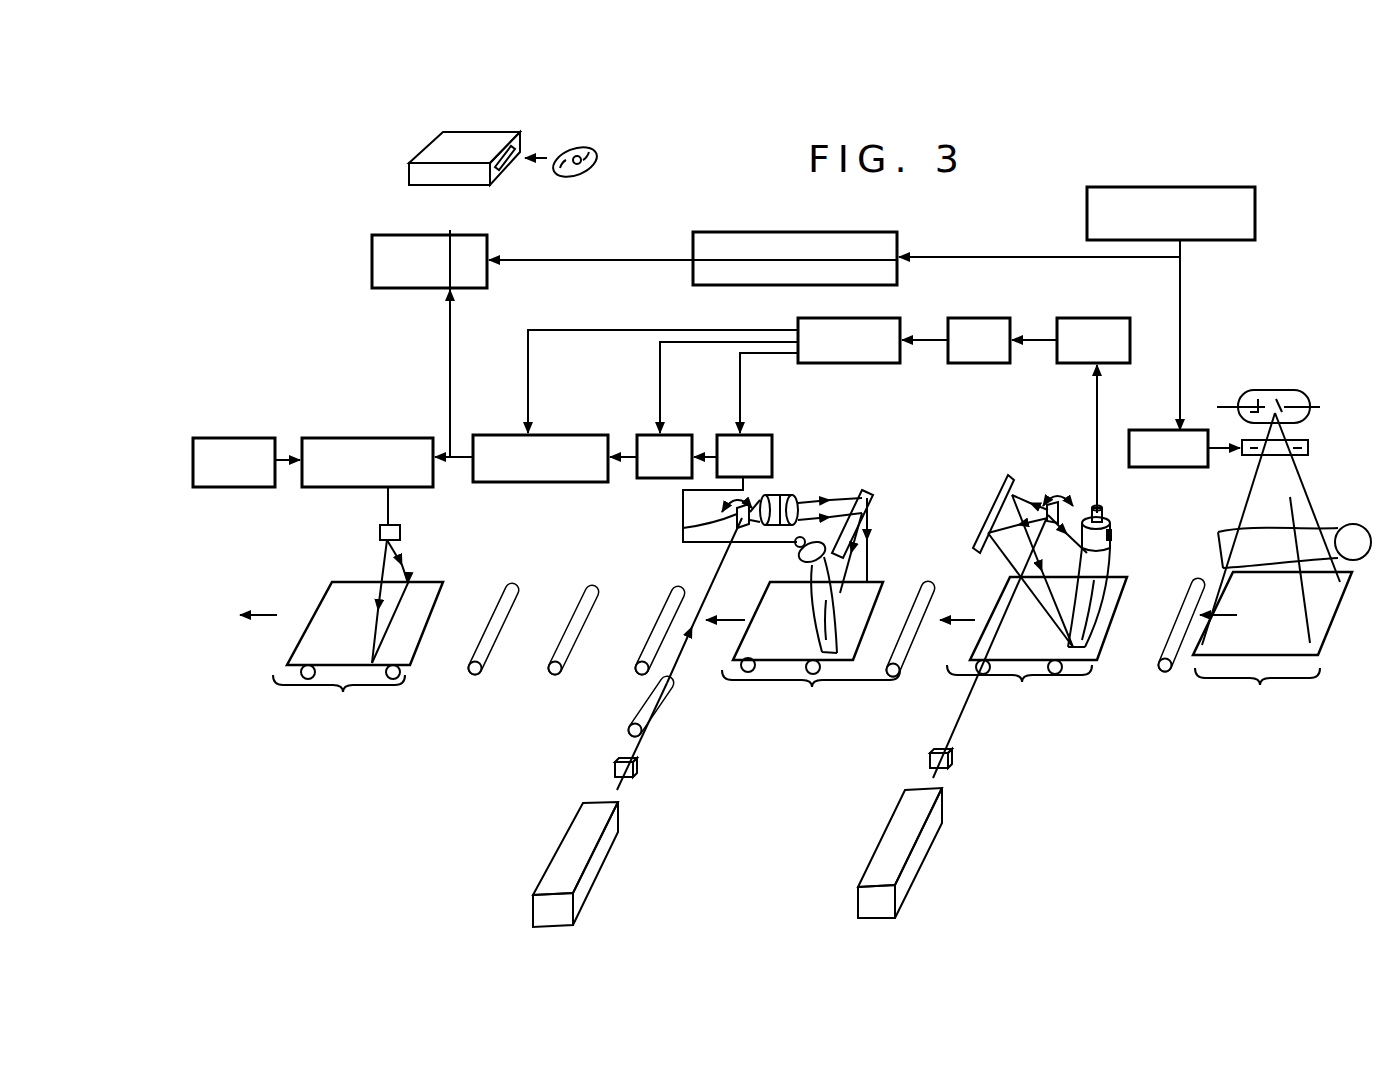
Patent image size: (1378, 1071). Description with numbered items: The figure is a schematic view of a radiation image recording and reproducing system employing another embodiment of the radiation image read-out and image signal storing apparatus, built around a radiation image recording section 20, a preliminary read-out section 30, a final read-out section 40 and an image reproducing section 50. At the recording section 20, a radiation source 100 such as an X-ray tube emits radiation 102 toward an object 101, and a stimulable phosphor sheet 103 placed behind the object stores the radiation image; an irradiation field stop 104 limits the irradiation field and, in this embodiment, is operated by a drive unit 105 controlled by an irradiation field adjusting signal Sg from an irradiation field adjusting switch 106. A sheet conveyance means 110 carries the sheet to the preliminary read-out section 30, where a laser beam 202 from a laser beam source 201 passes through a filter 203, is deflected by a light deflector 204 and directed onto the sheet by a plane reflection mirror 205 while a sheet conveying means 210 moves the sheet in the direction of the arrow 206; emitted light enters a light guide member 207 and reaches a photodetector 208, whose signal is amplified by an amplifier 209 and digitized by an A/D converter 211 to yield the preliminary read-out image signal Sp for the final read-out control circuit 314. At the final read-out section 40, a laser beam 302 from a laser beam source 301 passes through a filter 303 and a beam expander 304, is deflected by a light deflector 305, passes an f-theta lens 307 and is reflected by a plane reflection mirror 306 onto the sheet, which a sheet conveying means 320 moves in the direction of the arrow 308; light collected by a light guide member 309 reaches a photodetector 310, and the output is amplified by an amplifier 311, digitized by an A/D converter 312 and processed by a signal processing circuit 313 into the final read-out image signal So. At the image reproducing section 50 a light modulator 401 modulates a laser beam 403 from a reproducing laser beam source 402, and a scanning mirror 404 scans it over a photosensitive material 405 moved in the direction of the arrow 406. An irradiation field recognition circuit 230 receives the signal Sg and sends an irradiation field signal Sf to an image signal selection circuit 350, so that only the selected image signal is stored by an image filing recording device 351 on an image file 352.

The radiation source 100 is at (1297, 384).
The object 101 is at (1340, 534).
The radiation 102 is at (1252, 486).
The stimulable phosphor sheet 103 is at (1322, 622).
The irradiation field stop 104 is at (1243, 458).
The drive unit 105 is at (1147, 428).
The irradiation field adjusting switch 106 is at (1180, 186).
The sheet conveyance means 110 is at (1163, 672).
The radiation image recording section 20 is at (1257, 693).
The preliminary read-out section 30 is at (1019, 694).
The final read-out section 40 is at (811, 698).
The image reproducing section 50 is at (339, 704).
The laser beam source 201 is at (920, 848).
The laser beam 202 is at (938, 780).
The filter 203 is at (952, 758).
The light deflector 204 is at (1081, 458).
The plane reflection mirror 205 is at (991, 482).
The arrow (sub-scanning direction) 206 is at (965, 619).
The light guide member 207 is at (1100, 560).
The photodetector 208 is at (1110, 525).
The amplifier 209 is at (1080, 316).
The sheet conveying means 210 is at (1057, 674).
The A/D converter 211 is at (982, 317).
The irradiation field recognition circuit 230 is at (842, 230).
The laser beam source 301 is at (598, 858).
The laser beam 302 is at (620, 790).
The filter 303 is at (637, 766).
The beam expander 304 is at (665, 710).
The light deflector 305 is at (735, 518).
The plane reflection mirror 306 is at (870, 492).
The f-theta lens 307 is at (795, 498).
The arrow (sub-scanning direction) 308 is at (731, 620).
The light guide member 309 is at (838, 580).
The photodetector 310 is at (800, 556).
The amplifier 311 is at (772, 448).
The A/D converter 312 is at (655, 480).
The signal processing circuit 313 is at (503, 435).
The final read-out control circuit 314 is at (848, 316).
The sheet conveying means 320 is at (820, 668).
The image signal selection circuit 350 is at (372, 290).
The image filing recording device 351 is at (505, 178).
The image file 352 is at (592, 170).
The light modulator 401 is at (332, 436).
The reproducing laser beam source 402 is at (240, 436).
The laser beam 403 is at (283, 462).
The scanning mirror 404 is at (400, 530).
The photosensitive material 405 is at (343, 598).
The arrow (conveyance direction) 406 is at (275, 613).